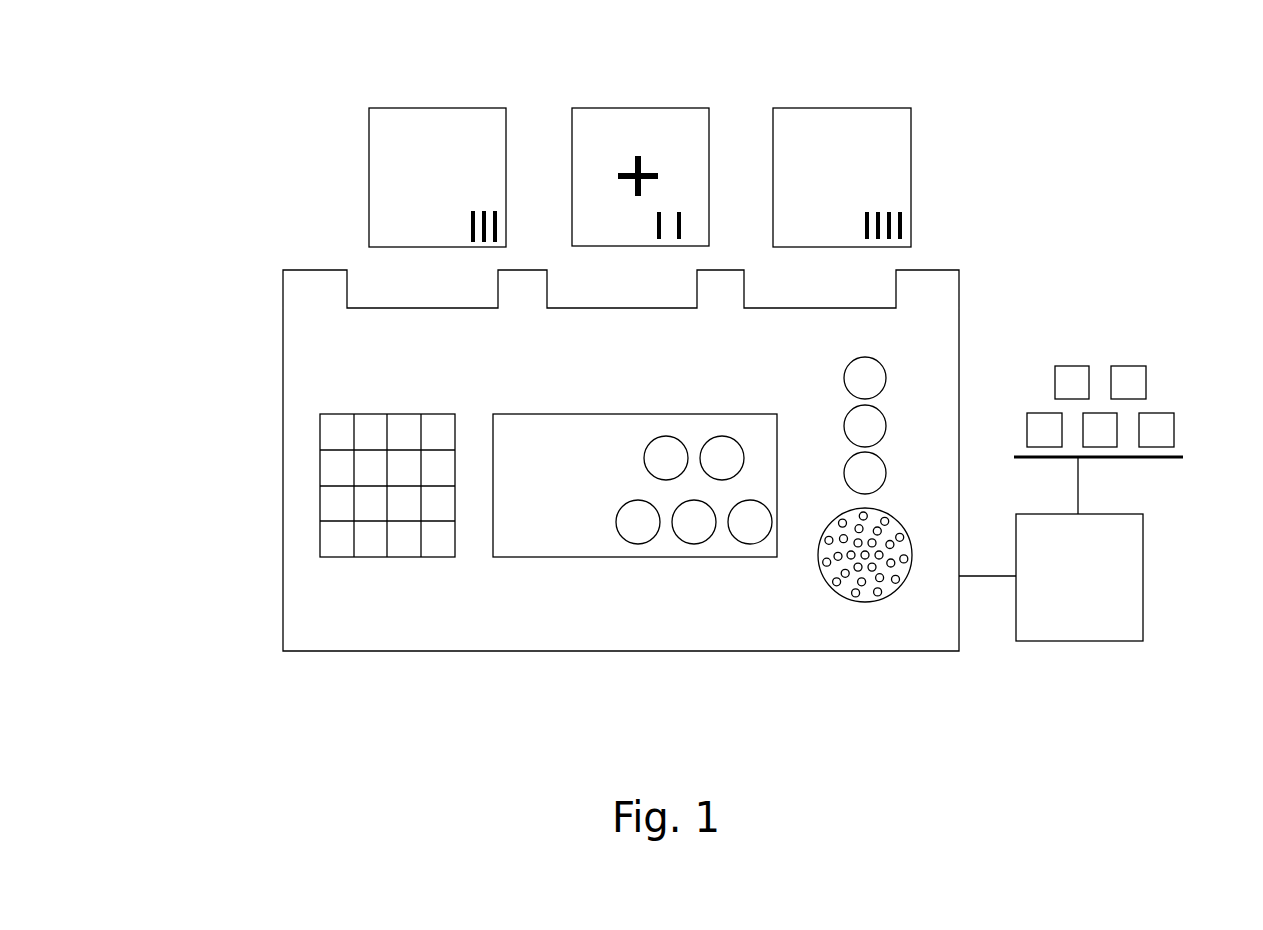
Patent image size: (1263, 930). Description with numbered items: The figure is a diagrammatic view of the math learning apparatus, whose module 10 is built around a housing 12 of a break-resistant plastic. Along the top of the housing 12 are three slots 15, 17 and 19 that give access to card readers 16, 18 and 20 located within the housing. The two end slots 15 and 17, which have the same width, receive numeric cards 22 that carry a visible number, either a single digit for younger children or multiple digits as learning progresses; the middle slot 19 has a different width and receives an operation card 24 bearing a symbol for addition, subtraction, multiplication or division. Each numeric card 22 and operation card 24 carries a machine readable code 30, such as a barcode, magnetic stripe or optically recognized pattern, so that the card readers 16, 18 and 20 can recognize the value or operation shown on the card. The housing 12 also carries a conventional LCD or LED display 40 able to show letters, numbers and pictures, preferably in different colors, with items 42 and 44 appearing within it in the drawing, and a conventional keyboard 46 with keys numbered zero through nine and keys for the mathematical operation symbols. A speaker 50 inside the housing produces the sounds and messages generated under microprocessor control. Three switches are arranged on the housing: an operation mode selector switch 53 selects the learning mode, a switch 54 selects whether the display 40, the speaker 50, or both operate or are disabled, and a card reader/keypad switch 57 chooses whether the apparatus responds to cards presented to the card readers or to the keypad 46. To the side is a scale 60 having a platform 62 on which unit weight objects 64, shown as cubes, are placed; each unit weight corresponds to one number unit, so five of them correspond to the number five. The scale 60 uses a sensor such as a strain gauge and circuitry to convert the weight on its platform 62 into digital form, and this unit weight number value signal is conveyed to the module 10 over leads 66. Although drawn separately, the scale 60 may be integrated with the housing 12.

The module 10 is at (199, 90).
The housing 12 is at (283, 617).
The slot 15 is at (348, 292).
The card reader 16 is at (443, 307).
The slot 17 is at (745, 292).
The card reader 18 is at (840, 307).
The slot 19 is at (548, 292).
The card reader 20 is at (645, 307).
The numeric card 22 is at (472, 107).
The operation card 24 is at (655, 107).
The machine readable code 30 is at (485, 211).
The display 40 is at (591, 560).
The numeric result display 42 is at (553, 513).
The indicator dots 44 is at (697, 532).
The keyboard 46 is at (320, 462).
The speaker 50 is at (870, 603).
The operation mode selector switch 53 is at (886, 378).
The switch 54 is at (886, 426).
The card reader/keypad switch 57 is at (886, 473).
The scale 60 is at (1068, 642).
The platform 62 is at (1143, 459).
The unit weight objects 64 is at (1072, 366).
The leads 66 is at (975, 577).